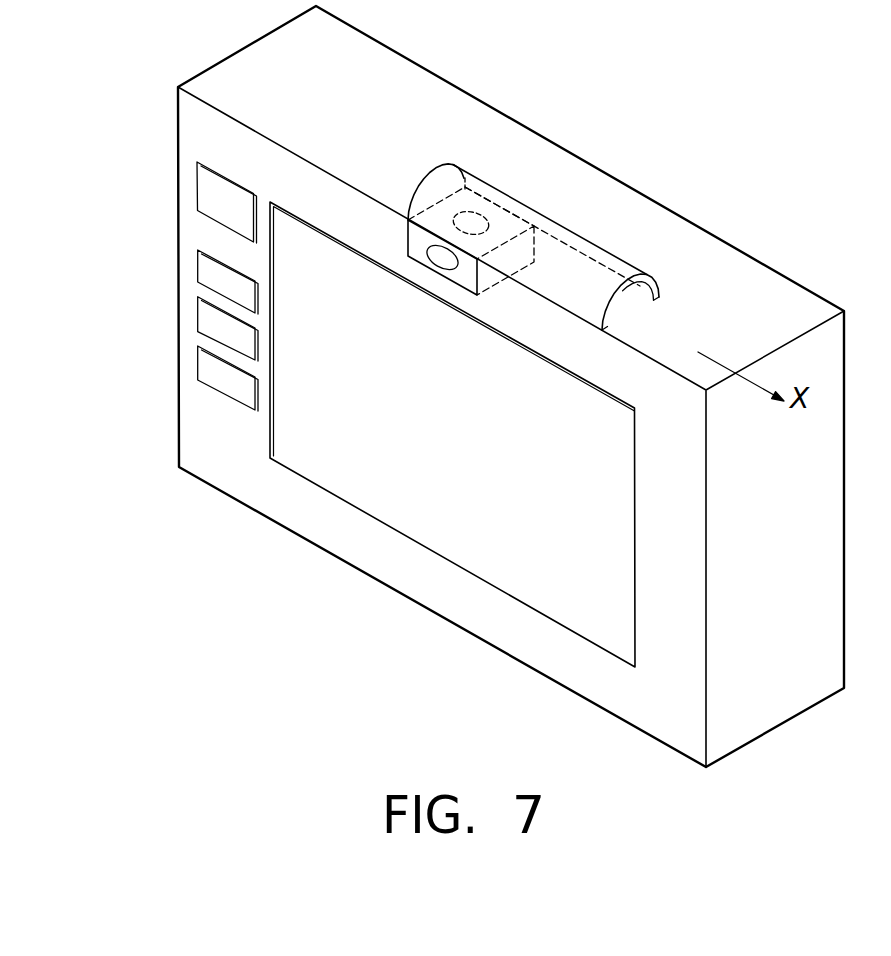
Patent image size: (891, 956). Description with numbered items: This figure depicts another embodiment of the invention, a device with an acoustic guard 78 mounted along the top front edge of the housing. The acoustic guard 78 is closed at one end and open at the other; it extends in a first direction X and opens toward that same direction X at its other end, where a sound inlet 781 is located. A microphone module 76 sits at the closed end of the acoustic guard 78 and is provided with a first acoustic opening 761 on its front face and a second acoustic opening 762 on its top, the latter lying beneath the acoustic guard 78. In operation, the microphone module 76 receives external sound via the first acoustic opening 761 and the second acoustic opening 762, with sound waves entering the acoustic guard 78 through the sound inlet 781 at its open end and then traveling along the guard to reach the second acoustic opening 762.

The microphone module 76 is at (408, 239).
The first acoustic opening 761 is at (443, 262).
The second acoustic opening 762 is at (478, 225).
The acoustic guard 78 is at (607, 265).
The sound inlet 781 is at (628, 305).